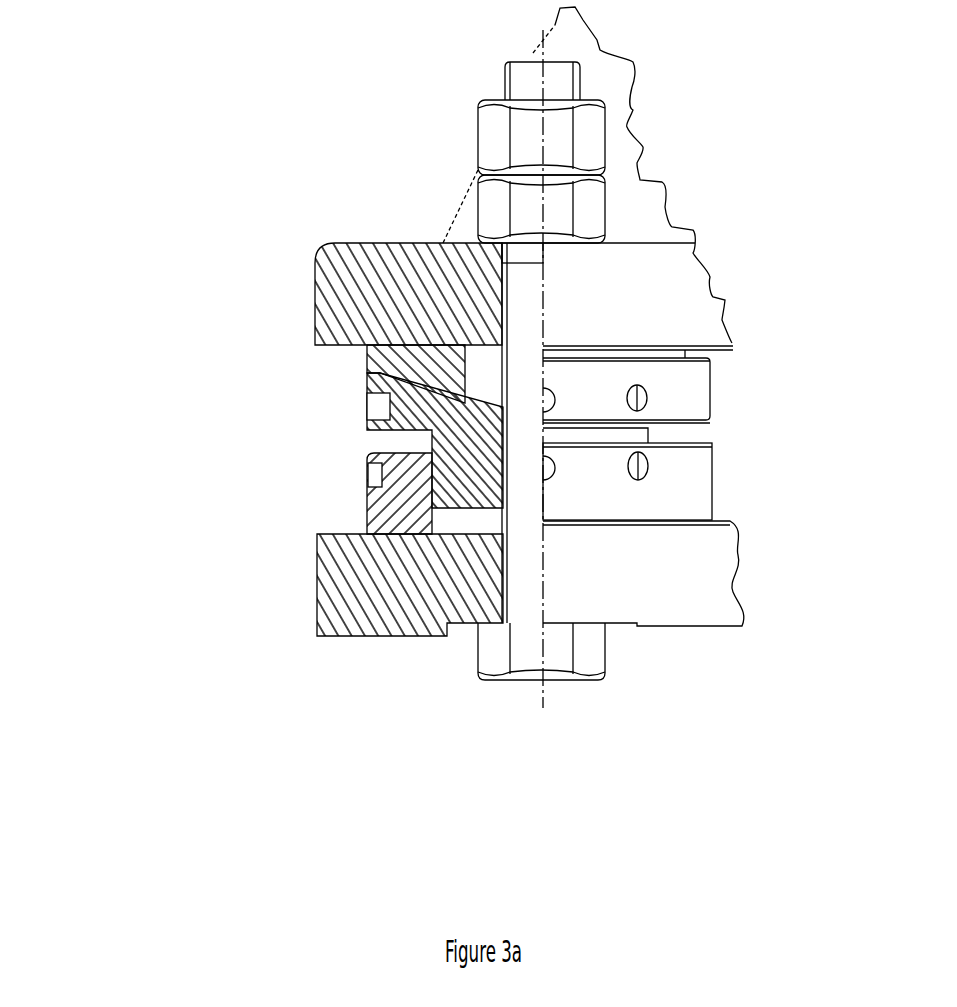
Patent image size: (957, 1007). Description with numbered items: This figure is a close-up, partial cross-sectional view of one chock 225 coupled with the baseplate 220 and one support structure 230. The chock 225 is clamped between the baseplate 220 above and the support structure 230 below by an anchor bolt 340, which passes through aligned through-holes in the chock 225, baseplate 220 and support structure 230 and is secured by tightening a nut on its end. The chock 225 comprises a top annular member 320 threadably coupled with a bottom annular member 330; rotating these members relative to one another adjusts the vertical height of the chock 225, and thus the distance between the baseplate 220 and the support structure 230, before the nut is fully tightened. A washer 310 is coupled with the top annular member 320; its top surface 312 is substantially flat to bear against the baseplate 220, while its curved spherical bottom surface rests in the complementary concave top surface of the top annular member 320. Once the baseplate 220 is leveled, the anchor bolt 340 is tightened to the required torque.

The chock 225 is at (166, 102).
The baseplate 220 is at (360, 258).
The support structure 230 is at (370, 637).
The washer 310 is at (377, 360).
The top annular member 320 is at (367, 389).
The bottom annular member 330 is at (370, 505).
The top surface of washer 312 is at (643, 343).
The anchor bolt 340 is at (555, 72).